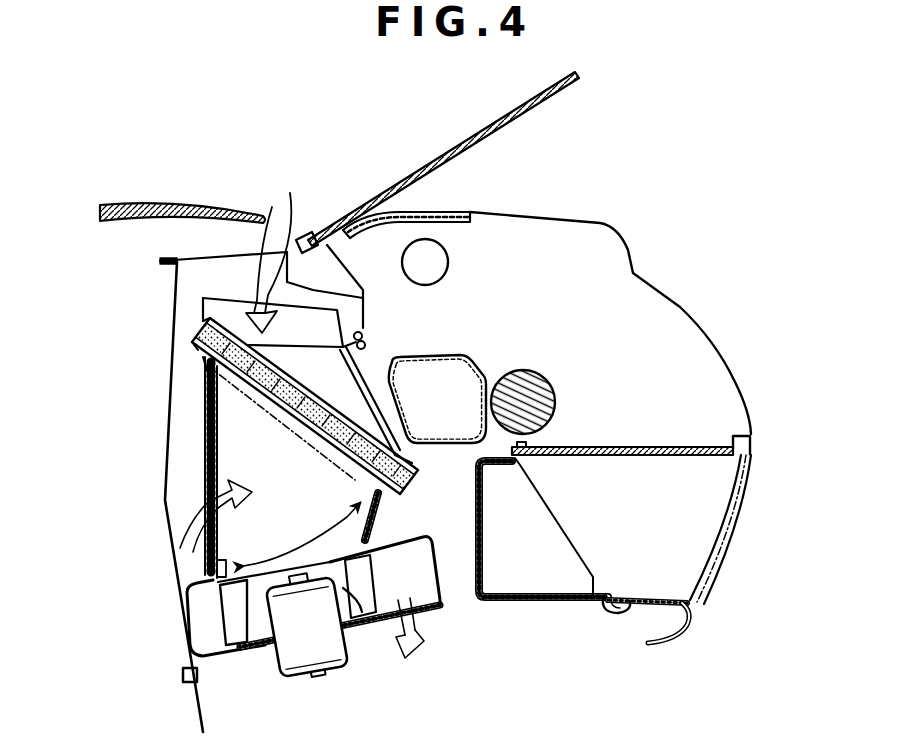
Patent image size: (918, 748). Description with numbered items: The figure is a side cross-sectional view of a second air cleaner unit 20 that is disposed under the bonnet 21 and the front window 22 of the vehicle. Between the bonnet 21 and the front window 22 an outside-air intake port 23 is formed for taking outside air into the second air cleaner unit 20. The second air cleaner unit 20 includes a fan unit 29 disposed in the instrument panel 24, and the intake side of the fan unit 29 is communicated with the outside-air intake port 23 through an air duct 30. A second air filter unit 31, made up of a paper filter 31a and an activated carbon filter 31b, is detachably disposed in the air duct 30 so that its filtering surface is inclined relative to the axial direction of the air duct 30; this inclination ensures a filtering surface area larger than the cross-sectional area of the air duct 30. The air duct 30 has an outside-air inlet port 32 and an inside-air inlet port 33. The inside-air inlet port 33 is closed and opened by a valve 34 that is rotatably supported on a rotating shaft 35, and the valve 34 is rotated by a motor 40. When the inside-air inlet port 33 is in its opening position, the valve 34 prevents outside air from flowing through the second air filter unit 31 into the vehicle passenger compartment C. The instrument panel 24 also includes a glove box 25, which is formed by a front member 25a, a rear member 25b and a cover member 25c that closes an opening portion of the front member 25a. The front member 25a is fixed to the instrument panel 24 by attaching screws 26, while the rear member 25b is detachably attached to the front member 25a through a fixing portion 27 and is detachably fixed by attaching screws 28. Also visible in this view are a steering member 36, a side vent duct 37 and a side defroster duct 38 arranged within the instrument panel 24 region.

The second air cleaner unit 20 is at (372, 634).
The bonnet 21 is at (158, 203).
The front window 22 is at (440, 157).
The outside-air intake port 23 is at (297, 237).
The instrument panel 24 is at (693, 335).
The glove box 25 is at (651, 442).
The front member 25a is at (710, 448).
The rear member 25b is at (520, 604).
The cover member 25c is at (720, 569).
The attaching screws 26 is at (688, 622).
The fixing portion 27 is at (521, 447).
The attaching screws 28 is at (627, 596).
The fan unit 29 is at (240, 642).
The air duct 30 is at (232, 478).
The second air filter unit 31 is at (310, 394).
The paper filter 31a is at (208, 340).
The activated carbon filter 31b is at (203, 362).
The outside-air inlet port 32 is at (308, 318).
The inside-air inlet port 33 is at (215, 557).
The valve 34 is at (228, 541).
The rotating shaft 35 is at (205, 384).
The steering member 36 is at (550, 381).
The side vent duct 37 is at (450, 357).
The side defroster duct 38 is at (448, 262).
The motor 40 is at (222, 399).
The vehicle passenger compartment C is at (613, 215).